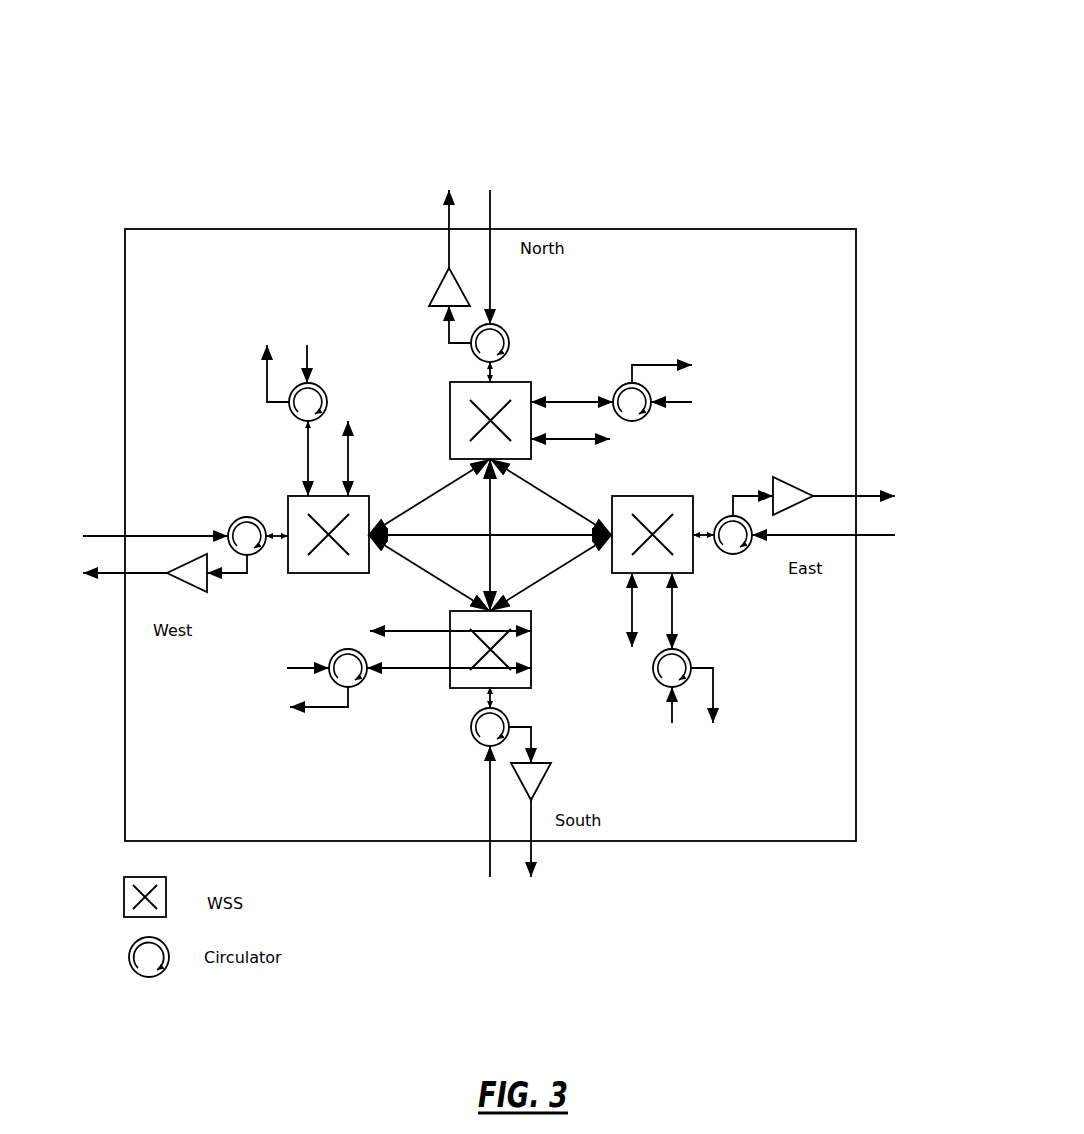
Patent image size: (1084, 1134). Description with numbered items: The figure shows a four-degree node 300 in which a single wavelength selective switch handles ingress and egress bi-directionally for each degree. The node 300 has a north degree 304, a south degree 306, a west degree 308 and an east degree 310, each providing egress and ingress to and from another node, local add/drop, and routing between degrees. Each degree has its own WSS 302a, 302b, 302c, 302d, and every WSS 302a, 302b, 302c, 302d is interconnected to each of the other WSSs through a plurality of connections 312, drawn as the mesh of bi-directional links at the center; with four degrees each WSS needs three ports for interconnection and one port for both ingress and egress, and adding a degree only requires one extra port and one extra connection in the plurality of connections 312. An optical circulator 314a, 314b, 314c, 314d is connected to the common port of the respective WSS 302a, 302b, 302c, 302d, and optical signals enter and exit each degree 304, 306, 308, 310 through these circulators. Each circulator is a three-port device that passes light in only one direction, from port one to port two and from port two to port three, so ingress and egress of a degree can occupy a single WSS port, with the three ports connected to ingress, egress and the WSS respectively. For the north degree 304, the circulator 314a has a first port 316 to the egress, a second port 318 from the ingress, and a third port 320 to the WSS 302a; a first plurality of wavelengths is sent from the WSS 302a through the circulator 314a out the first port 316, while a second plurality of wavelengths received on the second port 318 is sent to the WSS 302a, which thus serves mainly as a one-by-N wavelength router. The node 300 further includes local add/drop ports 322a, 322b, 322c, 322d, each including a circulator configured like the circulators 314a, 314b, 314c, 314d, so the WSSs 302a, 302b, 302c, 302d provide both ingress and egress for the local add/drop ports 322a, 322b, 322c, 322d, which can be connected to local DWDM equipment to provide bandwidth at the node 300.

The four-degree node 300 is at (778, 67).
The wavelength selective switch 302a is at (515, 382).
The wavelength selective switch 302b is at (448, 678).
The wavelength selective switch 302c is at (360, 496).
The wavelength selective switch 302d is at (682, 496).
The north degree 304 is at (472, 177).
The south degree 306 is at (473, 872).
The west degree 308 is at (102, 512).
The east degree 310 is at (868, 482).
The plurality of connections 312 is at (535, 517).
The optical circulator 314a is at (503, 330).
The optical circulator 314b is at (472, 738).
The optical circulator 314c is at (247, 517).
The optical circulator 314d is at (733, 555).
The first port 316 is at (448, 336).
The second port 318 is at (492, 257).
The third port 320 is at (489, 372).
The local add/drop port 322a is at (663, 337).
The local add/drop port 322b is at (310, 722).
The local add/drop port 322c is at (280, 308).
The local add/drop port 322d is at (633, 670).